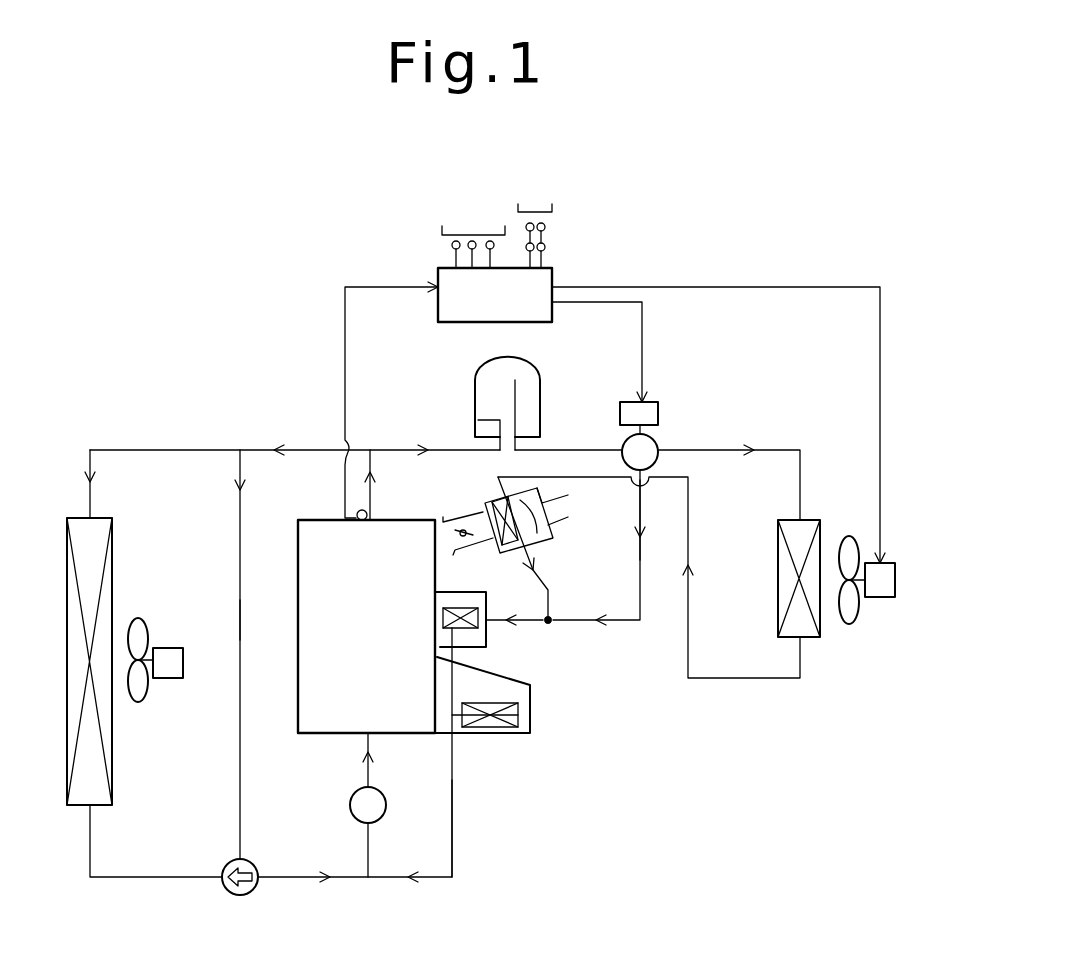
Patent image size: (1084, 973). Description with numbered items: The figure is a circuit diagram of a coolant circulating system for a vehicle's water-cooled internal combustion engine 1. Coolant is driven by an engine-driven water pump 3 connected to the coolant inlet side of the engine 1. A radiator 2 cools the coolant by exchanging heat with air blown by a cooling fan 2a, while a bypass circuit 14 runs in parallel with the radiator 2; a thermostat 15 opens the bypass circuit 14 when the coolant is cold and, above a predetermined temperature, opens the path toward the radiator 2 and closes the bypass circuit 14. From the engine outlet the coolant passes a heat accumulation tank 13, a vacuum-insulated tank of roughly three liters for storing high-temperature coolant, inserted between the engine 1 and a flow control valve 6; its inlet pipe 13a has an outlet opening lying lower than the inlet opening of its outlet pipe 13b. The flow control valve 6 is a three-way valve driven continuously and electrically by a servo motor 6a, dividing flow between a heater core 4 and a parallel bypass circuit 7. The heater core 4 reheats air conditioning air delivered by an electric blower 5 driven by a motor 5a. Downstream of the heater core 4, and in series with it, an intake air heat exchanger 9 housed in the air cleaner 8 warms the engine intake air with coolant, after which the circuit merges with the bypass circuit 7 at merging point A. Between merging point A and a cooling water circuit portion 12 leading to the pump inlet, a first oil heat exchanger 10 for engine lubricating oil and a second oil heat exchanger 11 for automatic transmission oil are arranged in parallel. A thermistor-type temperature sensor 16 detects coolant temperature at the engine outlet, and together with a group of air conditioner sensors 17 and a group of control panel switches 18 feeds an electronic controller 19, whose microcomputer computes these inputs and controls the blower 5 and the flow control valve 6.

The internal combustion engine 1 is at (297, 540).
The radiator 2 is at (83, 518).
The cooling fan 2a is at (137, 625).
The water pump 3 is at (380, 808).
The heater core 4 is at (806, 530).
The blower 5 is at (856, 622).
The motor 5a is at (892, 562).
The flow control valve 6 is at (645, 450).
The servo motor 6a is at (658, 411).
The bypass circuit 7 is at (642, 497).
The air cleaner 8 is at (540, 545).
The intake air heat exchanger 9 is at (500, 500).
The first oil heat exchanger 10 is at (465, 630).
The second oil heat exchanger 11 is at (505, 722).
The cooling water circuit portion 12 is at (453, 848).
The heat accumulation tank 13 is at (525, 370).
The inlet pipe 13a is at (484, 419).
The outlet pipe 13b is at (520, 398).
The bypass circuit 14 is at (241, 614).
The thermostat 15 is at (248, 890).
The temperature sensor 16 is at (353, 518).
The group of sensors 17 is at (475, 235).
The group of switches 18 is at (535, 212).
The electronic controller 19 is at (445, 272).
The merging point A is at (551, 622).